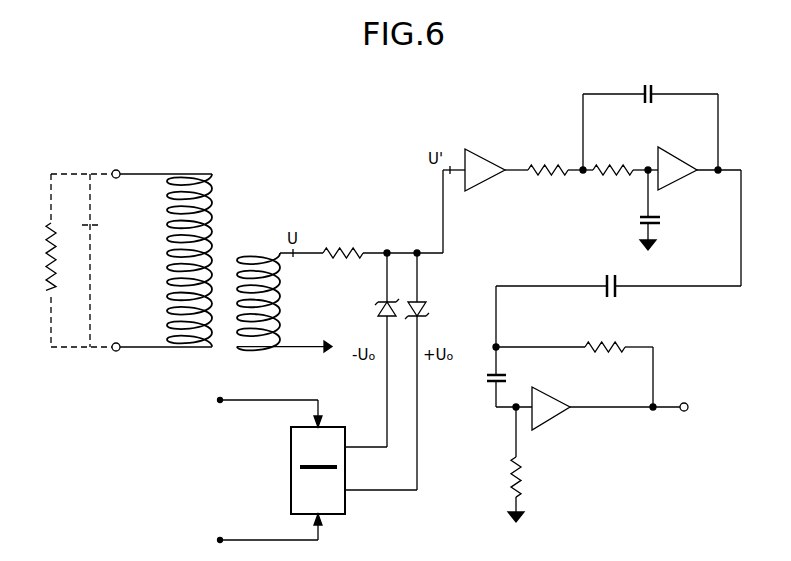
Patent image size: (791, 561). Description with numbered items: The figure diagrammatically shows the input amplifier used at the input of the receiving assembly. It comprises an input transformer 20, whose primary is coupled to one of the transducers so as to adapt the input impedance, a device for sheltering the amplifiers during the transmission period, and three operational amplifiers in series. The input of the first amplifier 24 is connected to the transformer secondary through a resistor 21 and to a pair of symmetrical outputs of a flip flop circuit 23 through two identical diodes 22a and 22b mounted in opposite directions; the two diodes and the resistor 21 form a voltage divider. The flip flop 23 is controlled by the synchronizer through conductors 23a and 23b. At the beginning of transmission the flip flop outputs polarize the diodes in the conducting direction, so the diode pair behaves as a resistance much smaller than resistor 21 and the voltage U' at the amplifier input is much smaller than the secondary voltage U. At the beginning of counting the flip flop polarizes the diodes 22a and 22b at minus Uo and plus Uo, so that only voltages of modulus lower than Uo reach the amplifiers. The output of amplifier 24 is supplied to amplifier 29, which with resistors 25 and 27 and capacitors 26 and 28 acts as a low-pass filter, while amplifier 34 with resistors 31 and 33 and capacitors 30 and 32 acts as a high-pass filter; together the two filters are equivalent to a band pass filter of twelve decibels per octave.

The input transformer 20 is at (224, 266).
The resistor 21 is at (338, 250).
The diode 22a is at (380, 316).
The diode 22b is at (427, 314).
The flip flop circuit 23 is at (290, 475).
The conductor 23a is at (218, 401).
The conductor 23b is at (218, 541).
The amplifier 24 is at (477, 160).
The resistor 25 is at (538, 166).
The capacitor 26 is at (652, 104).
The resistor 27 is at (611, 162).
The capacitor 28 is at (640, 222).
The amplifier 29 is at (680, 173).
The capacitor 30 is at (617, 290).
The resistor 31 is at (602, 343).
The capacitor 32 is at (507, 380).
The resistor 33 is at (522, 486).
The amplifier 34 is at (555, 415).